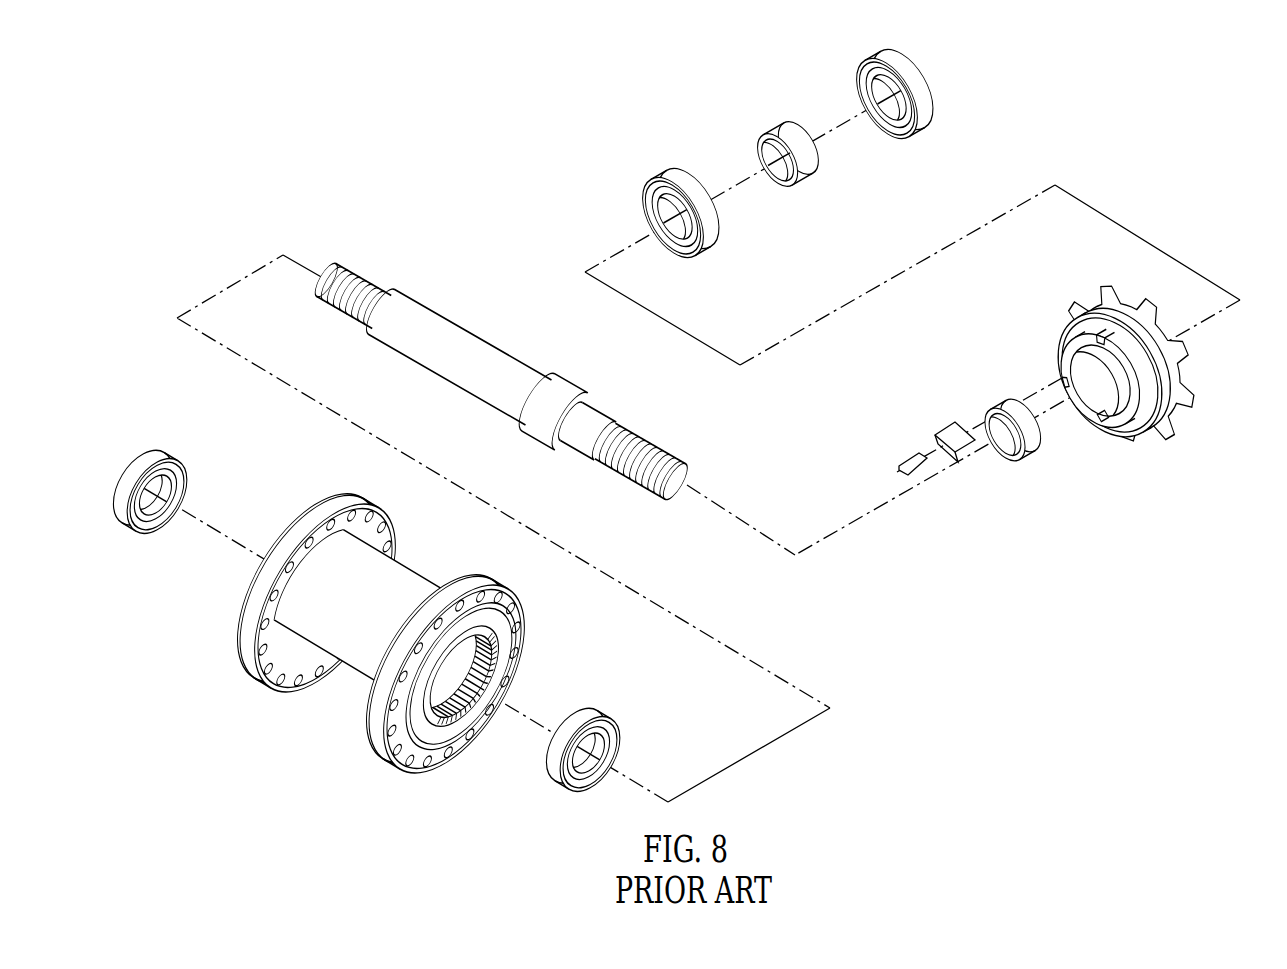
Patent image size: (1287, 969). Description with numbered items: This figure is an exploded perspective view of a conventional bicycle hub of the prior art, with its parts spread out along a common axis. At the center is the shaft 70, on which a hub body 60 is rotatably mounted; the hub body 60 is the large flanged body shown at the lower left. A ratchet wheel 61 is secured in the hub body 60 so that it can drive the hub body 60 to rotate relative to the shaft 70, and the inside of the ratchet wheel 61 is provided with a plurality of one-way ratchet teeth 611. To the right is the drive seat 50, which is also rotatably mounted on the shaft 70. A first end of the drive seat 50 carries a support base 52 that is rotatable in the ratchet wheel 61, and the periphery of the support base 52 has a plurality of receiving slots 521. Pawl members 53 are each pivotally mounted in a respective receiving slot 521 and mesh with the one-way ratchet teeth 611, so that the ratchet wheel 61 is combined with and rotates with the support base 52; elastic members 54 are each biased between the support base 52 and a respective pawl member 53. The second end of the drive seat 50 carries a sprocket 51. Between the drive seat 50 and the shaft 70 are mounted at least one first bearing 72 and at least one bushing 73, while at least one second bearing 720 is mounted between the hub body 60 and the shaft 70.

The drive seat 50 is at (1108, 293).
The sprocket 51 is at (1193, 398).
The support base 52 is at (1085, 352).
The receiving slots 521 is at (1088, 333).
The pawl members 53 is at (1068, 385).
The elastic members 54 is at (914, 460).
The hub body 60 is at (347, 687).
The ratchet wheel 61 is at (447, 732).
The one-way ratchet teeth 611 is at (495, 656).
The shaft 70 is at (462, 360).
The first bearing 72 is at (720, 232).
The bushing 73 is at (810, 166).
The second bearing 720 is at (168, 462).